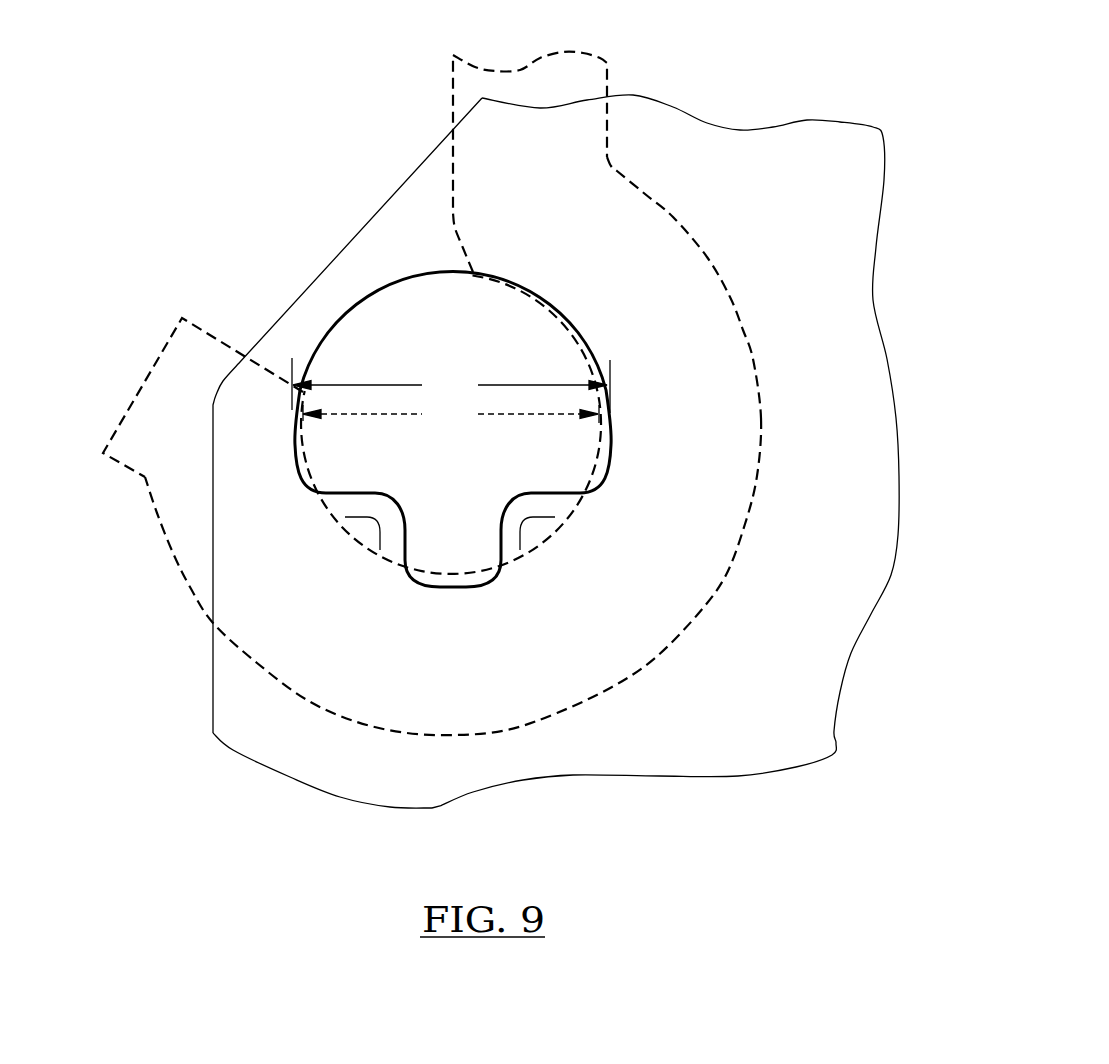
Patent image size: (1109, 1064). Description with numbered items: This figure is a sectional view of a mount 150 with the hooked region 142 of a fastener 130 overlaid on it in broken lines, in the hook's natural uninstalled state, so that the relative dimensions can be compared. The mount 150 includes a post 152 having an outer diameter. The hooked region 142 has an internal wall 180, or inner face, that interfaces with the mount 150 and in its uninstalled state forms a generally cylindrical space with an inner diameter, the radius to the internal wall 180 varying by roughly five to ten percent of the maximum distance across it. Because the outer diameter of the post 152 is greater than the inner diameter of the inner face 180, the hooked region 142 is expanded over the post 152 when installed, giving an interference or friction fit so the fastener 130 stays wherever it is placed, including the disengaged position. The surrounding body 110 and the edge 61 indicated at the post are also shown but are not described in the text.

The housing body 110 is at (858, 457).
The hooked region 142 is at (692, 541).
The fastener 130 is at (543, 665).
The mount 150 is at (385, 320).
The post 152 is at (405, 376).
The edge of opening 61 is at (610, 383).
The internal wall 180 is at (600, 414).